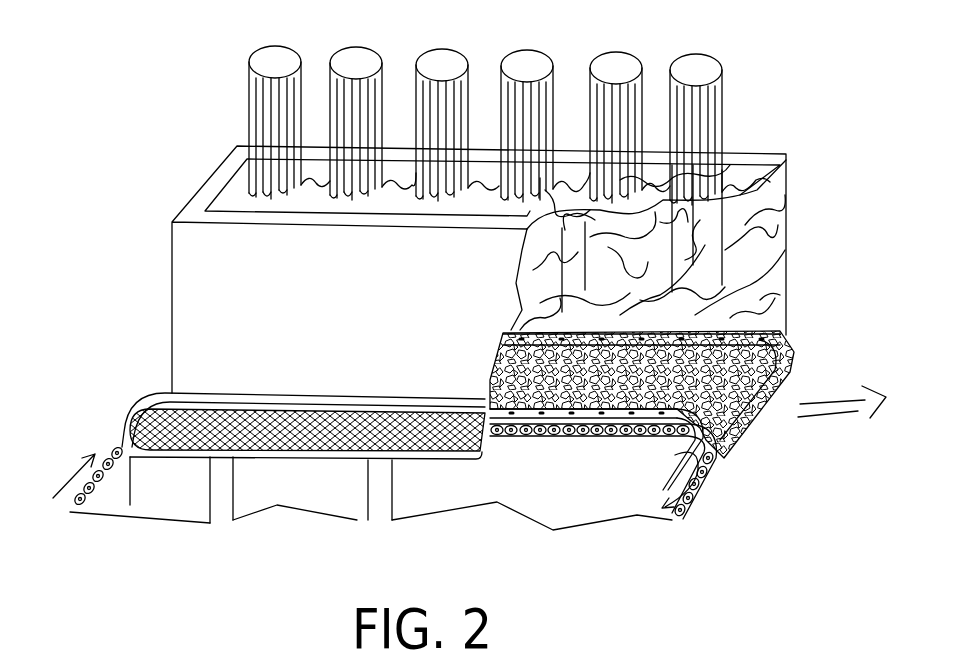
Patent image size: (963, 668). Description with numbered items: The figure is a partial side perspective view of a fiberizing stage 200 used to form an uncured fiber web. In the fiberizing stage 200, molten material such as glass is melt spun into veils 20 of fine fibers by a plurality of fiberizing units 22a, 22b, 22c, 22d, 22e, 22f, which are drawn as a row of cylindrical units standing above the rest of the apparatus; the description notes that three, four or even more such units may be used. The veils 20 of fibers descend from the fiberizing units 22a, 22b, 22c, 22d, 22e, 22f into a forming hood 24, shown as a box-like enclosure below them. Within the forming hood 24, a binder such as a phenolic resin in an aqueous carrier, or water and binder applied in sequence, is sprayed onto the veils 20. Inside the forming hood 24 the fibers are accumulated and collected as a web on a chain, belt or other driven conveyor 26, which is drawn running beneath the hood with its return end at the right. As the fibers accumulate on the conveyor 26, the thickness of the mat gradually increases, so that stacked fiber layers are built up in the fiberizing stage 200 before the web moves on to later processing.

The fiberizing stage 200 is at (90, 366).
The veils 20 is at (234, 123).
The fiberizing unit 22a is at (262, 48).
The fiberizing unit 22b is at (350, 48).
The fiberizing unit 22c is at (445, 50).
The fiberizing unit 22d is at (537, 50).
The fiberizing unit 22e is at (627, 52).
The fiberizing unit 22f is at (710, 54).
The forming hood 24 is at (172, 285).
The conveyor 26 is at (606, 450).